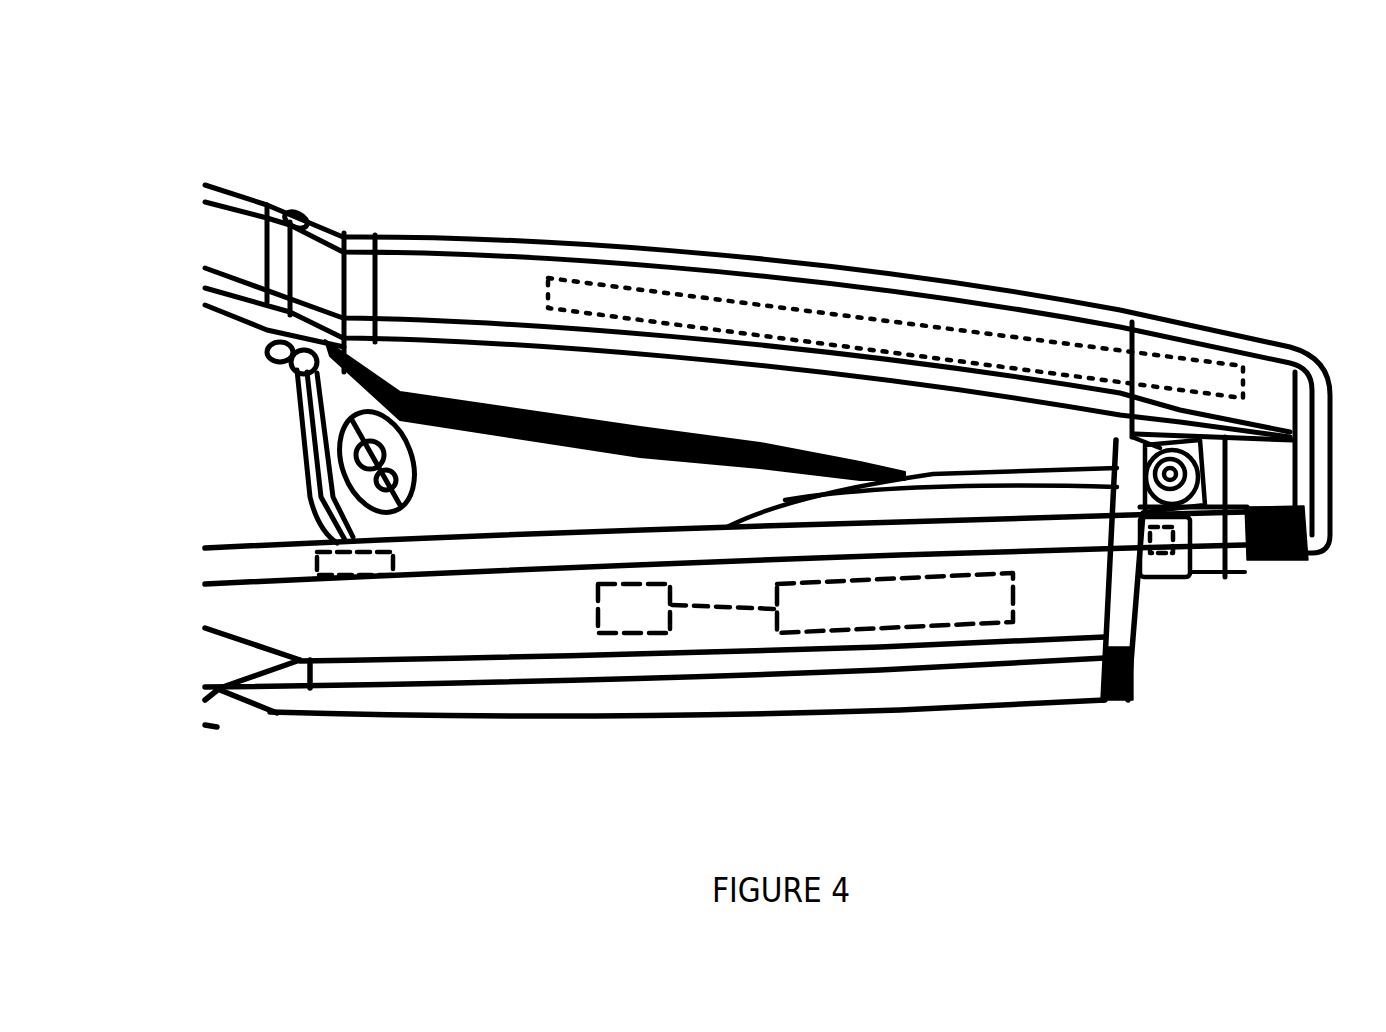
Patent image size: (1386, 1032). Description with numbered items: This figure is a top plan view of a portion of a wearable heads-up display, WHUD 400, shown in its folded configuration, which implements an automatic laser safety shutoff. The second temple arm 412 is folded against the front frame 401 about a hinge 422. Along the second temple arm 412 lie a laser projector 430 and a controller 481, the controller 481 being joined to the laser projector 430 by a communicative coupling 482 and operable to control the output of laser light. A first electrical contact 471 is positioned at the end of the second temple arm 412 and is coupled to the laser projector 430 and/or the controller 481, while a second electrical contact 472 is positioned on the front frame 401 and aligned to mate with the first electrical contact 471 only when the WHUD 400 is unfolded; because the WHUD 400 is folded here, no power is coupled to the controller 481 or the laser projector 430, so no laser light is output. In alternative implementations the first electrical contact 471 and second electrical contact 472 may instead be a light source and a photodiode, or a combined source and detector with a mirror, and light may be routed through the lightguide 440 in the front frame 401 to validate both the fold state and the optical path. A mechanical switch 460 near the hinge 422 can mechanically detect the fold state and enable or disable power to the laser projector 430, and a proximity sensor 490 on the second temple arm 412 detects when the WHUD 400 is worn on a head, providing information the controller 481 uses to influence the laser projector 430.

The WHUD 400 is at (1046, 125).
The front frame 401 is at (513, 288).
The second temple arm 412 is at (748, 622).
The hinge 422 is at (1135, 338).
The laser projector 430 is at (930, 612).
The lightguide 440 is at (720, 297).
The mechanical switch 460 is at (1157, 580).
The first electrical contact 471 is at (1133, 677).
The second electrical contact 472 is at (1292, 560).
The controller 481 is at (612, 622).
The communicative coupling 482 is at (693, 607).
The proximity sensor 490 is at (353, 562).